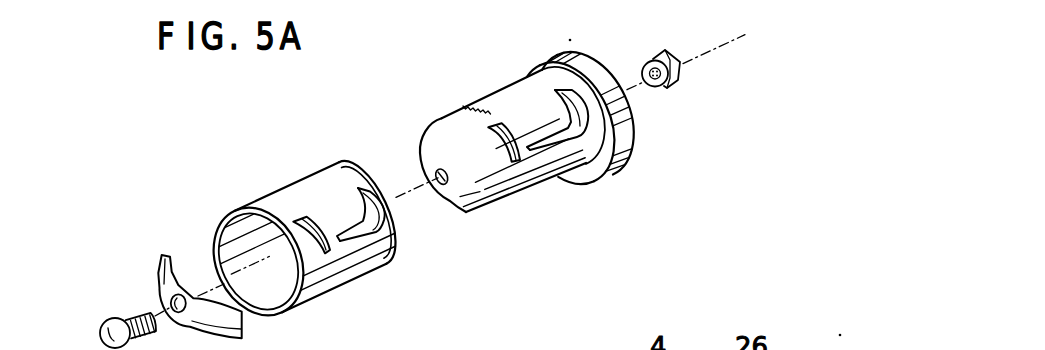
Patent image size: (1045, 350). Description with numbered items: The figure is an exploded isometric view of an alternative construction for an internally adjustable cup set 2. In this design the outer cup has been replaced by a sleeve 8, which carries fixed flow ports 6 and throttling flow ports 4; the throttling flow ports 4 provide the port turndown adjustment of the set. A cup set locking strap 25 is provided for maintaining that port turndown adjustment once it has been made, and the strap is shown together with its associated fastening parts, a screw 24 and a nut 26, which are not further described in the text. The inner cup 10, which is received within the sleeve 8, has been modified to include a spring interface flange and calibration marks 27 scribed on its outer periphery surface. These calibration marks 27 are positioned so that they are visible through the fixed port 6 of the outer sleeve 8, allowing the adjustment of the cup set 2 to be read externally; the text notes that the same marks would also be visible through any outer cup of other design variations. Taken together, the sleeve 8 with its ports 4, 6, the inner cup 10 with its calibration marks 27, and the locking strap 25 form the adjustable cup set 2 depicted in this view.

The internally adjustable cup set 2 is at (390, 257).
The throttling flow ports 4 is at (358, 188).
The fixed flow ports 6 is at (321, 245).
The sleeve 8 is at (272, 202).
The inner cup 10 is at (522, 90).
The screw 24 is at (105, 321).
The cup set locking strap 25 is at (155, 274).
The nut 26 is at (658, 55).
The calibration marks 27 is at (465, 105).